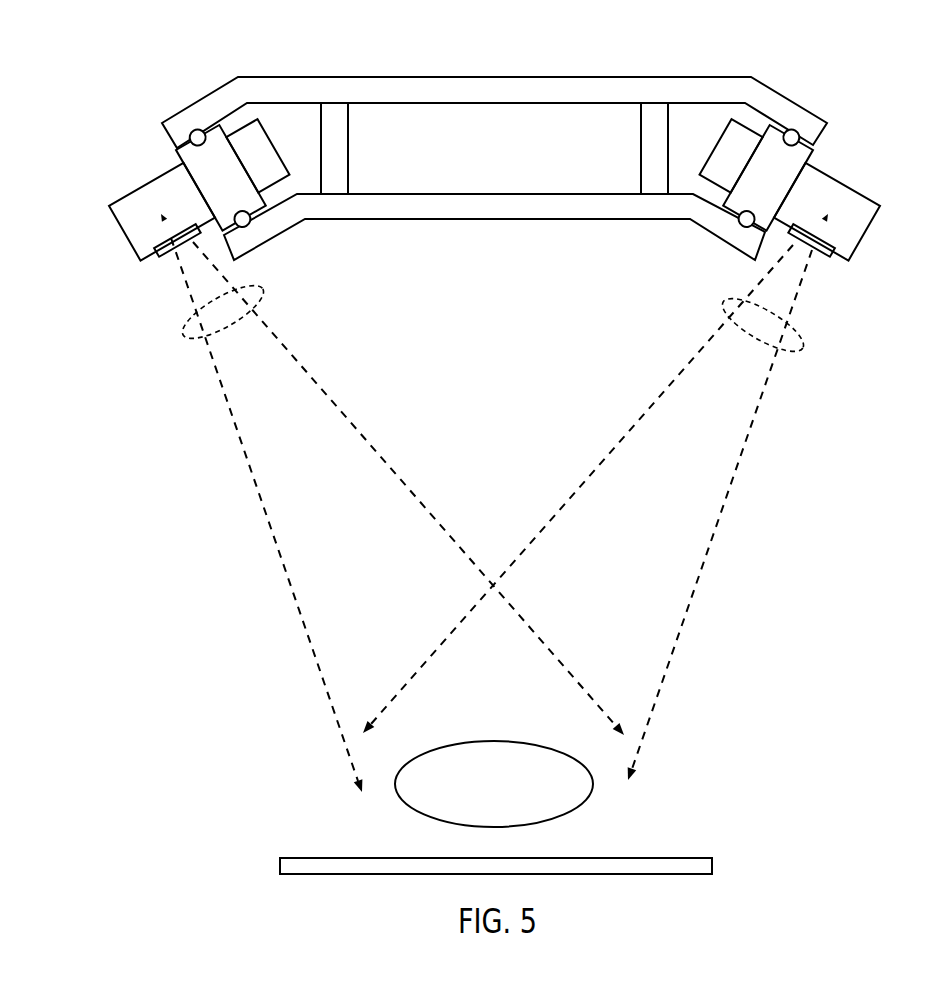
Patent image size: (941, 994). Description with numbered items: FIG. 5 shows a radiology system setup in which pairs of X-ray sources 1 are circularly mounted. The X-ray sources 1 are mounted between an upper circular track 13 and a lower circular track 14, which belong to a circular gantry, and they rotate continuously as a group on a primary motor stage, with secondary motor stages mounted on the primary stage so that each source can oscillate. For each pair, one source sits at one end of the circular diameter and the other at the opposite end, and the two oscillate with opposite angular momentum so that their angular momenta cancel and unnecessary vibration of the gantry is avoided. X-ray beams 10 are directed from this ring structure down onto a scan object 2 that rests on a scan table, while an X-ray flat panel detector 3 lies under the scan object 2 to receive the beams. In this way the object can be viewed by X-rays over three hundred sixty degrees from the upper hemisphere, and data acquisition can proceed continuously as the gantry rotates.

The X-ray source 1 is at (122, 230).
The scan object 2 is at (537, 780).
The X-ray flat panel detector 3 is at (280, 858).
The X-ray beam 10 is at (191, 325).
The upper circular track 13 is at (505, 78).
The lower circular track 14 is at (492, 219).